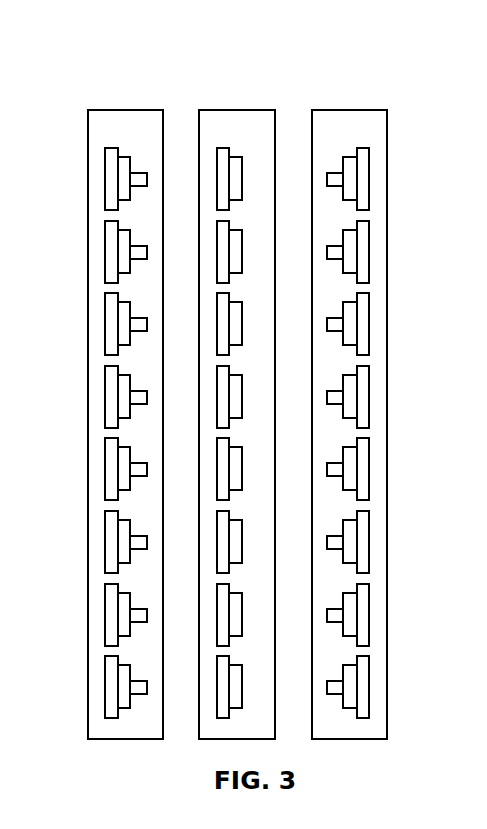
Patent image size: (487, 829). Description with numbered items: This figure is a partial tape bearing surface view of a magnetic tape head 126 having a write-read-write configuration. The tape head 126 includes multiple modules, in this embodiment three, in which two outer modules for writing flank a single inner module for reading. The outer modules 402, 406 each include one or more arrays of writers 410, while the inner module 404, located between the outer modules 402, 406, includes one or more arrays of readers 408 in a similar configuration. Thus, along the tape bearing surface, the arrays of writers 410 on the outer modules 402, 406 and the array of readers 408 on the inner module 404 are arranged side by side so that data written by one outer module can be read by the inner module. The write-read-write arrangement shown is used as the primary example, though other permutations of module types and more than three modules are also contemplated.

The tape head 126 is at (50, 73).
The outer module 402 is at (118, 80).
The inner module 404 is at (238, 80).
The outer module 406 is at (340, 80).
The readers 408 is at (242, 322).
The writers 410 is at (369, 394).